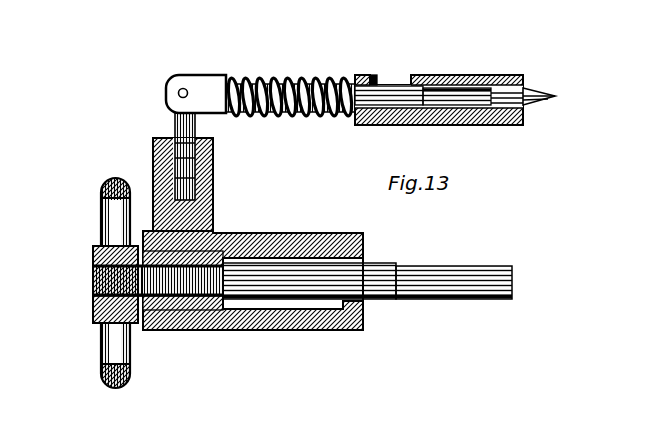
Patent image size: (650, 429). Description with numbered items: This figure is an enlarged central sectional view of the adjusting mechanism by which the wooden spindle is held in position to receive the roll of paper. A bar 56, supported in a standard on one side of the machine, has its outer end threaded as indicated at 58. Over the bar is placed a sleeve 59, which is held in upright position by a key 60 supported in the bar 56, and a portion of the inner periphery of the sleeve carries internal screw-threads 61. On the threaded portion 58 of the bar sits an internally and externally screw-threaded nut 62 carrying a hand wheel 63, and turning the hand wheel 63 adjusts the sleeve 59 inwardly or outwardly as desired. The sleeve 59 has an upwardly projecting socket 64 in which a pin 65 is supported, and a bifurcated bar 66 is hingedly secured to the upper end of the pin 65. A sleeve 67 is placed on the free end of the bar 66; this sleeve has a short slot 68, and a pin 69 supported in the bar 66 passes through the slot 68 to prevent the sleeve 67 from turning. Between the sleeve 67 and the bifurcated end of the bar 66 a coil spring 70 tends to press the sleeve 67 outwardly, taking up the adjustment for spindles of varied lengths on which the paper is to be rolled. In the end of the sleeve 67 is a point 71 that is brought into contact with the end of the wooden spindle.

The bar 56 is at (432, 268).
The threaded outer end of bar 58 is at (85, 272).
The sleeve 59 is at (288, 218).
The key 60 is at (372, 256).
The internal screw-threads 61 is at (207, 245).
The nut 62 is at (86, 244).
The hand wheel 63 is at (95, 193).
The socket 64 is at (207, 152).
The pin 65 is at (166, 114).
The bifurcated bar 66 is at (205, 77).
The sleeve 67 is at (461, 67).
The slot 68 is at (397, 76).
The pin 69 is at (365, 67).
The coil spring 70 is at (262, 76).
The point 71 is at (532, 91).